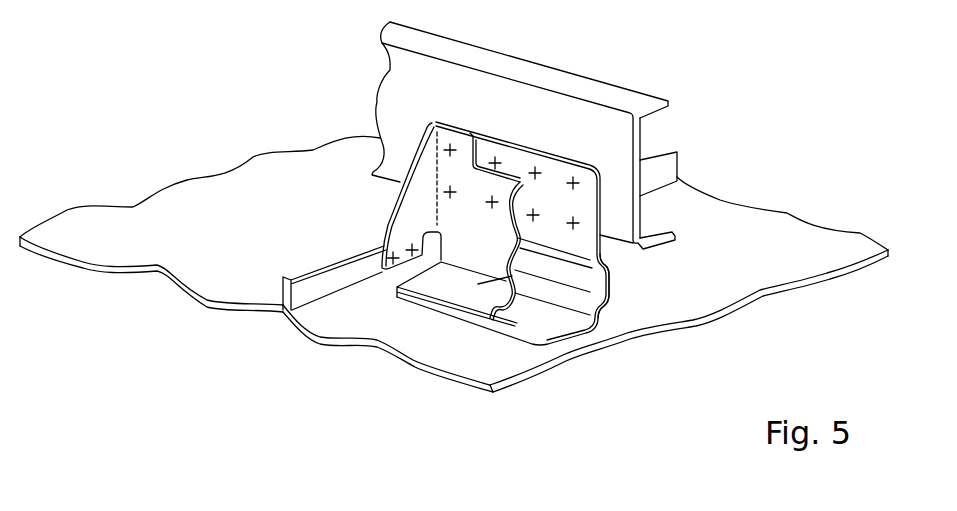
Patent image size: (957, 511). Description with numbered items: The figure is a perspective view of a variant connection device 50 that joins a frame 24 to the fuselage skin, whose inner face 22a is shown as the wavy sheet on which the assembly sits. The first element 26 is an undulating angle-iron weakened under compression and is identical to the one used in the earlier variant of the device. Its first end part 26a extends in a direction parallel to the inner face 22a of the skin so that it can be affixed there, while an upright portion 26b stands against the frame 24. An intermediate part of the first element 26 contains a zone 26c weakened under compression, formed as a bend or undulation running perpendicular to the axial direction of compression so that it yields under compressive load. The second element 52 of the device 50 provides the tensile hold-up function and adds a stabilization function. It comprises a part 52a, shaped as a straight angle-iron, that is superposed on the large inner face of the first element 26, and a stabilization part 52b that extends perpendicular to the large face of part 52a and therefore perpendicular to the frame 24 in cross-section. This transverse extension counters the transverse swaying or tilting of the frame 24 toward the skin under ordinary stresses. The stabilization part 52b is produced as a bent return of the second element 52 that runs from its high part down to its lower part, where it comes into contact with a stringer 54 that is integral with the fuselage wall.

The inner face of the fuselage skin 22a is at (757, 237).
The frame 24 is at (410, 93).
The first element 26 is at (620, 316).
The first end part 26a is at (545, 322).
The bracket upright portion 26b is at (552, 182).
The zone weakened under compression 26c is at (607, 270).
The connection device 50 is at (338, 191).
The second element 52 is at (480, 226).
The part of second element 52a is at (485, 262).
The stabilization part 52b is at (405, 220).
The stringer 54 is at (303, 268).